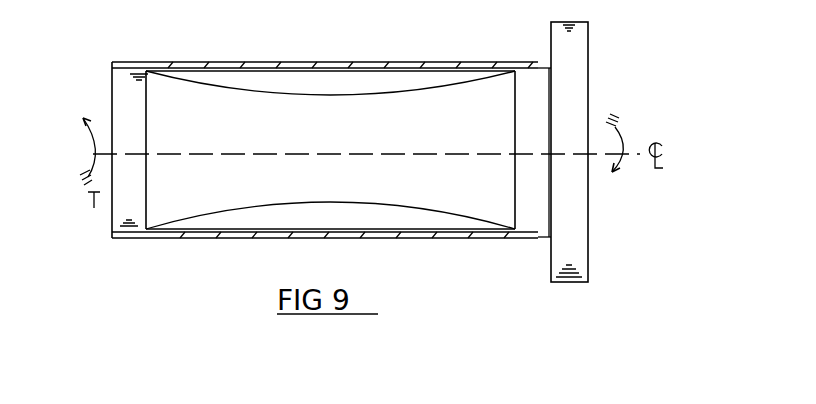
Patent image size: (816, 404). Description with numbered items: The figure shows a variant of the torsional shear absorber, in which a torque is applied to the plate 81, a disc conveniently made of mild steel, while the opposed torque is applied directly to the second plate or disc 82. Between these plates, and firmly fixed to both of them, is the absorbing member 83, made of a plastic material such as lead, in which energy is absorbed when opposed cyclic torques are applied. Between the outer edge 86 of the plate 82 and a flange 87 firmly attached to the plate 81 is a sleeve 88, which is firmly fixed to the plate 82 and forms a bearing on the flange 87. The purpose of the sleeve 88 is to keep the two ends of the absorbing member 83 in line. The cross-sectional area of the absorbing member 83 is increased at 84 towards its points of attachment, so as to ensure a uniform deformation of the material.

The plate 81 is at (597, 152).
The plate 82 is at (309, 150).
The absorbing member 83 is at (366, 132).
The increased cross-sectional area 84 is at (330, 151).
The outer edge 86 is at (138, 127).
The flange 87 is at (530, 174).
The sleeve 88 is at (325, 129).